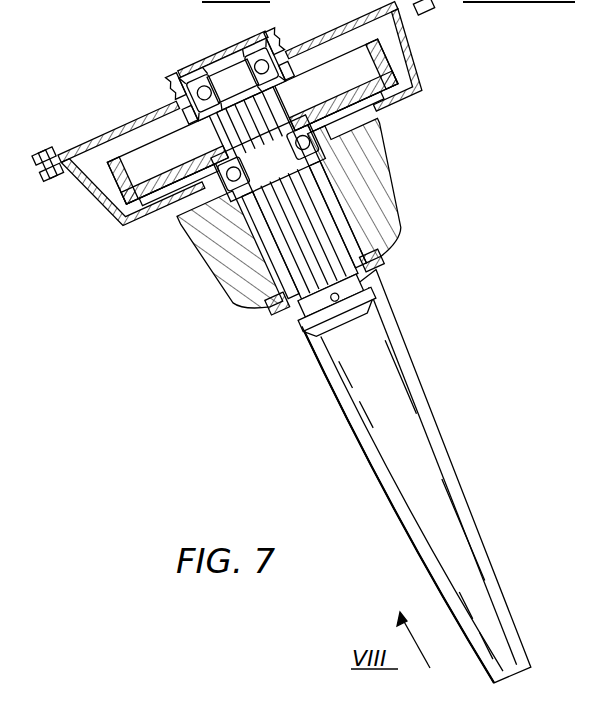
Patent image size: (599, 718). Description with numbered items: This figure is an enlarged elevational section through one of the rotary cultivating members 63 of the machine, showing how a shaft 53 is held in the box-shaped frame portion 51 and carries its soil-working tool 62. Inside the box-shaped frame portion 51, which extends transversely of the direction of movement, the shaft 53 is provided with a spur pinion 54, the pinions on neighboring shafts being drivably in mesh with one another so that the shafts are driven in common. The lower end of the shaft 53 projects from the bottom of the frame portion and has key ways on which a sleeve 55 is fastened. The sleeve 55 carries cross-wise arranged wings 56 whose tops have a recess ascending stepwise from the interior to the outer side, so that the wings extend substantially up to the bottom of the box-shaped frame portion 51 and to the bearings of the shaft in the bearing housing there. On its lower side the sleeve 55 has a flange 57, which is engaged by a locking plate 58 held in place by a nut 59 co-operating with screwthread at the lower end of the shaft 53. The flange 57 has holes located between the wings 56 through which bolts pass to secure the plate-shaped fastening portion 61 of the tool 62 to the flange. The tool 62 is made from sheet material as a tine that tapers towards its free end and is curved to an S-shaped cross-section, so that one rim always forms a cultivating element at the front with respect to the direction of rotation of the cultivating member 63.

The box-shaped frame portion 51 is at (108, 214).
The shaft 53 is at (322, 229).
The spur pinion 54 is at (396, 78).
The sleeve 55 is at (270, 246).
The wings 56 is at (383, 180).
The flange 57 is at (248, 296).
The locking plate 58 is at (296, 320).
The nut 59 is at (308, 330).
The plate-shaped fastening portion 61 is at (390, 258).
The tool 62 is at (423, 404).
The cultivating member 63 is at (408, 529).